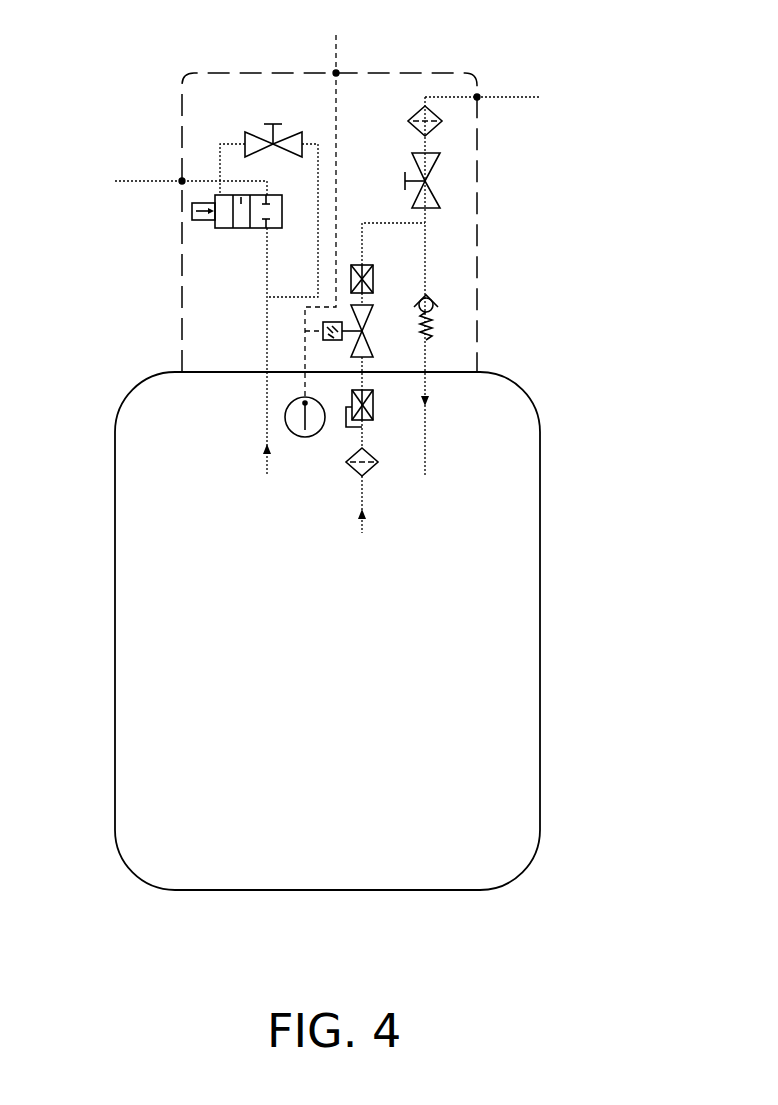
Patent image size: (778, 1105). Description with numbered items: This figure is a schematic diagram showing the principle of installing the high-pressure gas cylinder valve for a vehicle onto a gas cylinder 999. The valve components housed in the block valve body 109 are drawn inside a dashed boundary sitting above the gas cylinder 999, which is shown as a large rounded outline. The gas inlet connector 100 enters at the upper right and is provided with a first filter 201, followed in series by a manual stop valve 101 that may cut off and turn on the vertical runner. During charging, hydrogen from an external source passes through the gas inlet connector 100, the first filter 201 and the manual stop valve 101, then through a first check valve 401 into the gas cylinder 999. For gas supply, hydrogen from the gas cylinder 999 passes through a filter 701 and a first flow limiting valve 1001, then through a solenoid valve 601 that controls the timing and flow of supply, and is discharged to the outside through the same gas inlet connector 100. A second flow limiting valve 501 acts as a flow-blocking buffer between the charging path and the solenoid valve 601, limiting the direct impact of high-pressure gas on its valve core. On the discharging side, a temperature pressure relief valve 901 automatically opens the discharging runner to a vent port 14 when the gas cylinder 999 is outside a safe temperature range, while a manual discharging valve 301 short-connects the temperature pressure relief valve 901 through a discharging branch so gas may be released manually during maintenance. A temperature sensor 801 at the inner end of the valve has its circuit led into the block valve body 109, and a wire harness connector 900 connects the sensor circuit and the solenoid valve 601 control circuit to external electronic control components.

The wire harness connector 900 is at (340, 55).
The gas inlet connector 100 is at (500, 95).
The vent port 14 is at (132, 178).
The block valve body 109 is at (182, 318).
The manual discharging valve 301 is at (272, 143).
The first filter 201 is at (440, 121).
The manual stop valve 101 is at (432, 168).
The temperature pressure relief valve 901 is at (218, 232).
The second flow limiting valve 501 is at (373, 275).
The first check valve 401 is at (436, 312).
The solenoid valve 601 is at (372, 345).
The temperature sensor 801 is at (296, 434).
The first flow limiting valve 1001 is at (373, 418).
The filter 701 is at (366, 475).
The gas cylinder 999 is at (522, 578).